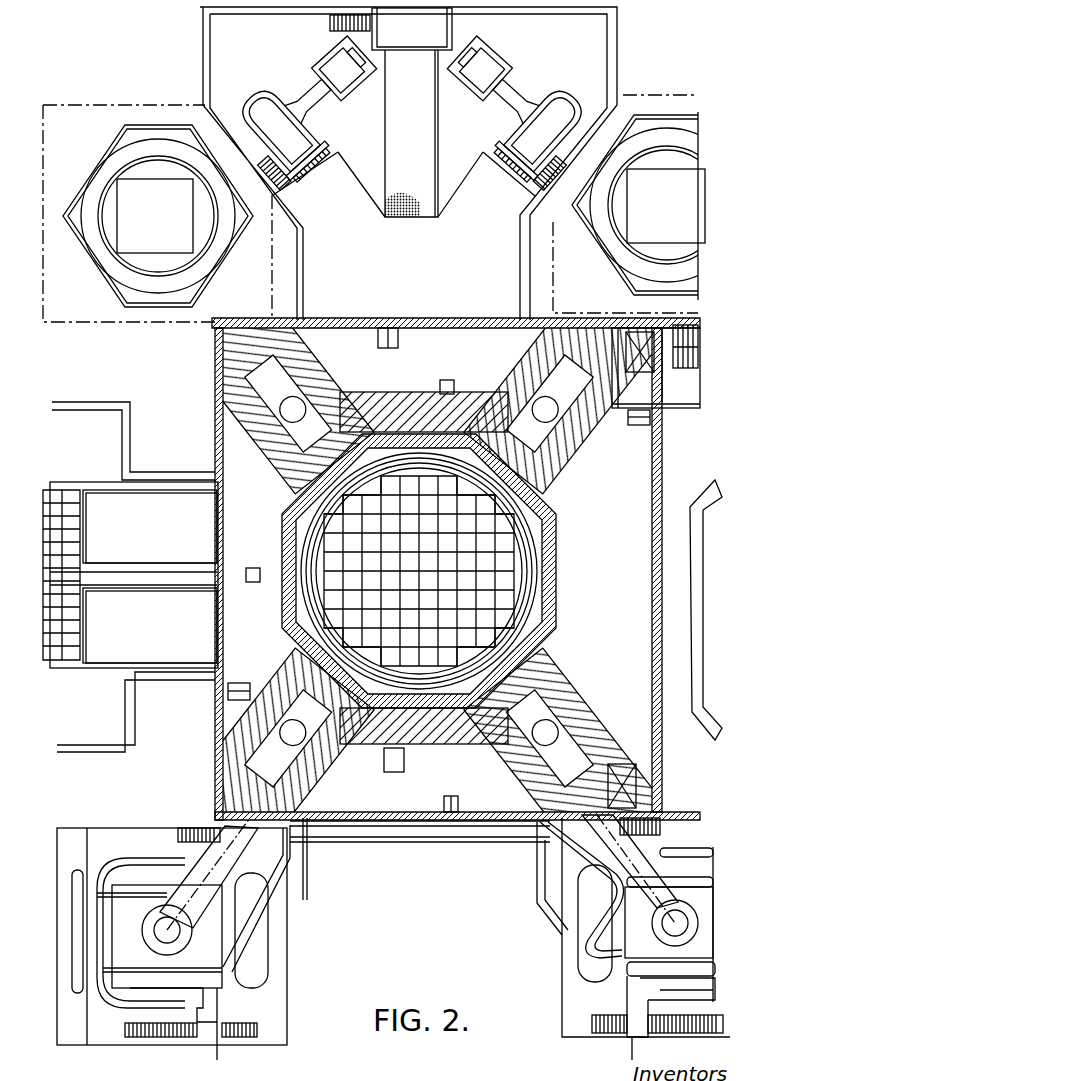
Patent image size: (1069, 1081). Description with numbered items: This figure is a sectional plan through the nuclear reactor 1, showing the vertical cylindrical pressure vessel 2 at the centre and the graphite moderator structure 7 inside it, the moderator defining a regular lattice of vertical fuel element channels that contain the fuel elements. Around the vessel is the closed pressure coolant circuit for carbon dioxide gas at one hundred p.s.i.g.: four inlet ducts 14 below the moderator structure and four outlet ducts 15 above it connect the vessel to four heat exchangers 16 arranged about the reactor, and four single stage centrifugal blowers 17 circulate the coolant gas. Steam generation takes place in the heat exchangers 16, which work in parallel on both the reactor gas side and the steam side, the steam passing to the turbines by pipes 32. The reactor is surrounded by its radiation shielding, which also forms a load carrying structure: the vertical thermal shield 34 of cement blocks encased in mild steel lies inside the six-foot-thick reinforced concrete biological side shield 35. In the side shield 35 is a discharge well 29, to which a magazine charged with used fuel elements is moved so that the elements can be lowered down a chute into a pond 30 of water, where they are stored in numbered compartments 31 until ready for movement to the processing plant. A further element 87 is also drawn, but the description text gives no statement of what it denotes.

The nuclear reactor 1 is at (500, 522).
The pressure vessel 2 is at (534, 586).
The graphite moderator structure 7 is at (470, 640).
The inlet ducts 14 is at (514, 710).
The outlet ducts 15 is at (640, 900).
The heat exchangers 16 is at (157, 307).
The single stage centrifugal blowers 17 is at (557, 96).
The discharge well 29 is at (250, 574).
The pond 30 is at (60, 650).
The numbered compartments 31 is at (70, 630).
The pipes 32 is at (445, 830).
The vertical thermal shield 34 is at (546, 536).
The side shield 35 is at (594, 548).
The bar 87 is at (368, 840).